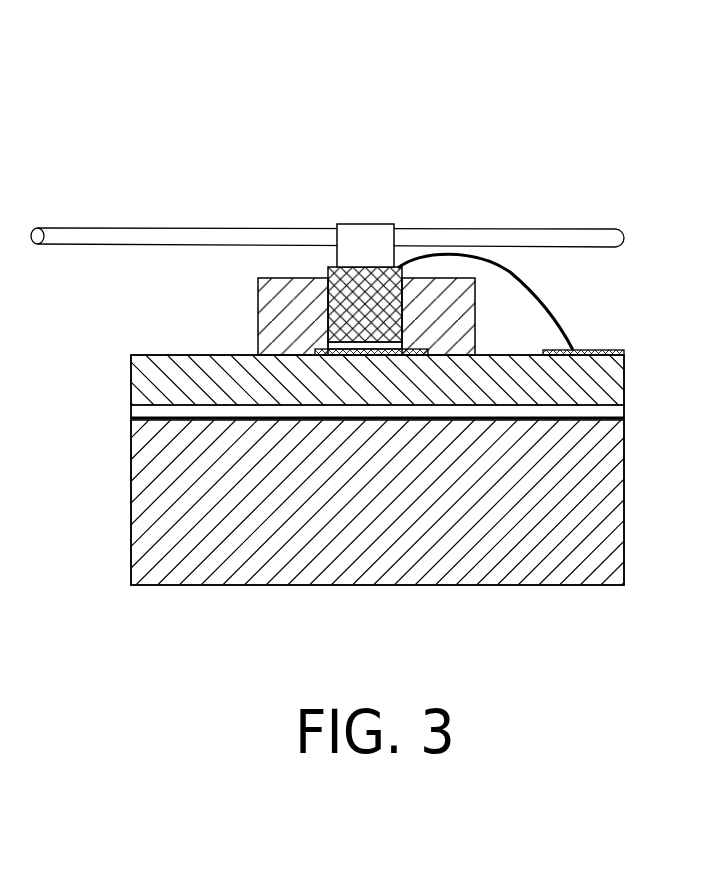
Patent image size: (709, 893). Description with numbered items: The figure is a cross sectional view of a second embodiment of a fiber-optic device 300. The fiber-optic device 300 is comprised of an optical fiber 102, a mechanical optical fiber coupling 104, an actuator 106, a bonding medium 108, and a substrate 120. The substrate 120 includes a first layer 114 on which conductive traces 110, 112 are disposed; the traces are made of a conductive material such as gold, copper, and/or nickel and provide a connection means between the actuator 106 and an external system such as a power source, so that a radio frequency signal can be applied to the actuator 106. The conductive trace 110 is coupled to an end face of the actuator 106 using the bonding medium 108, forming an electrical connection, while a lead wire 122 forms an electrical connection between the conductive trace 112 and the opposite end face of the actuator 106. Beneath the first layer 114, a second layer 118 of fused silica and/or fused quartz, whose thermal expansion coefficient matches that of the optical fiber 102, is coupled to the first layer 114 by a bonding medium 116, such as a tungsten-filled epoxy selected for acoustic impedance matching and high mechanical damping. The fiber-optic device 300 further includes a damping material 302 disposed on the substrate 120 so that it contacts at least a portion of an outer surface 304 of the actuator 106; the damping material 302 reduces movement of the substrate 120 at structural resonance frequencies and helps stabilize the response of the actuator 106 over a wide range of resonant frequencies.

The fiber-optic device 300 is at (497, 126).
The optical fiber 102 is at (527, 229).
The mechanical optical fiber coupling 104 is at (383, 258).
The actuator 106 is at (403, 323).
The bonding medium 108 is at (325, 346).
The conductive trace 110 is at (432, 350).
The conductive trace 112 is at (593, 350).
The first layer 114 is at (131, 380).
The bonding medium 116 is at (131, 412).
The second layer 118 is at (131, 510).
The substrate 120 is at (354, 426).
The lead wire 122 is at (552, 295).
The damping material 302 is at (287, 277).
The outer surface 304 is at (314, 303).